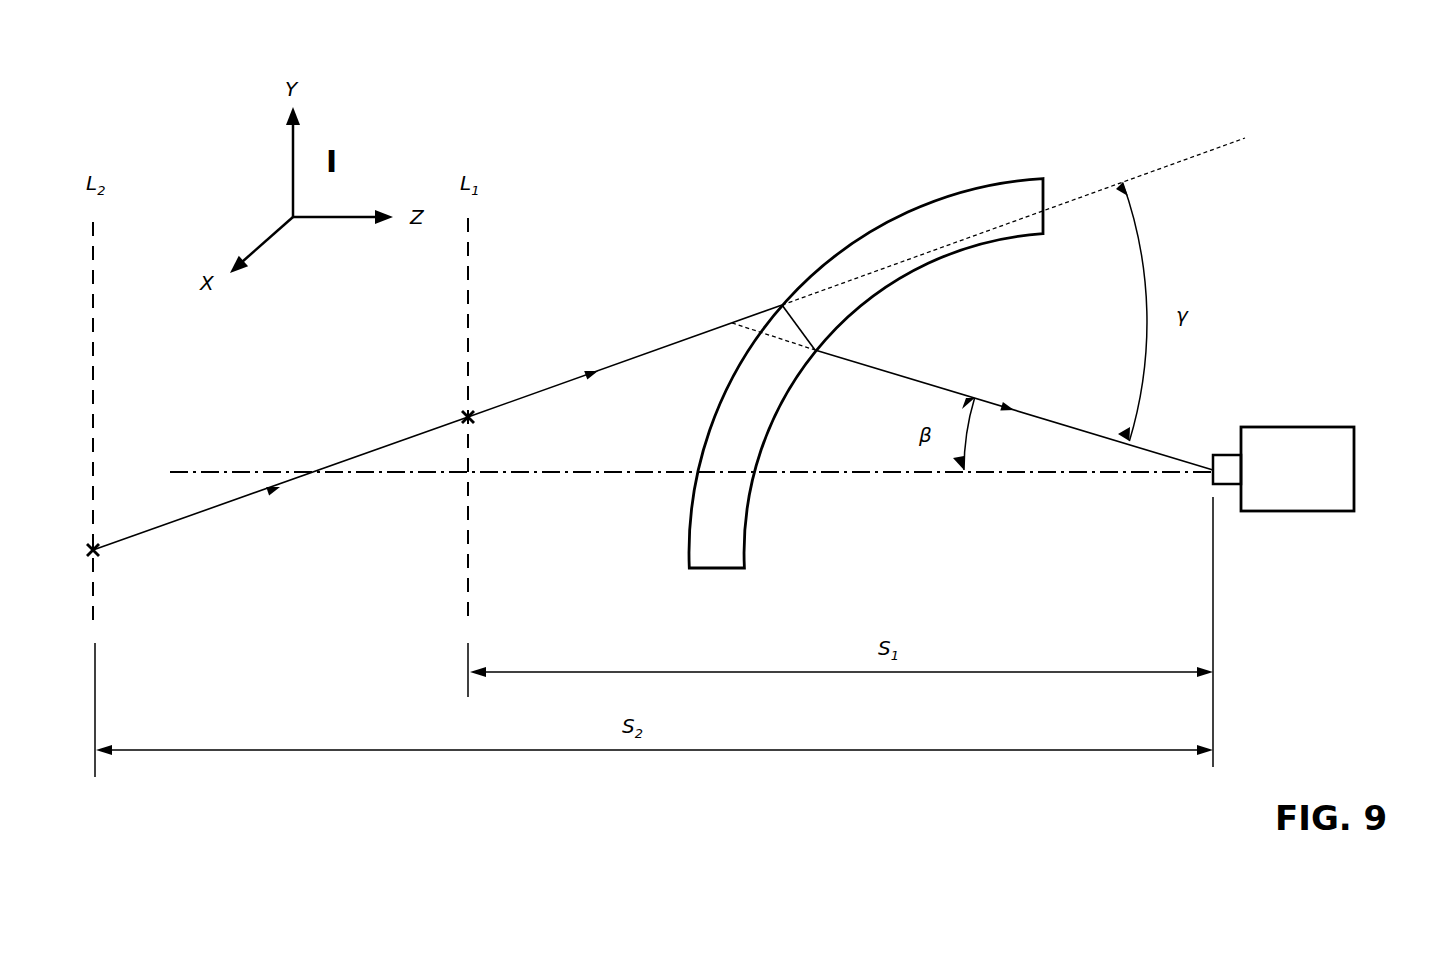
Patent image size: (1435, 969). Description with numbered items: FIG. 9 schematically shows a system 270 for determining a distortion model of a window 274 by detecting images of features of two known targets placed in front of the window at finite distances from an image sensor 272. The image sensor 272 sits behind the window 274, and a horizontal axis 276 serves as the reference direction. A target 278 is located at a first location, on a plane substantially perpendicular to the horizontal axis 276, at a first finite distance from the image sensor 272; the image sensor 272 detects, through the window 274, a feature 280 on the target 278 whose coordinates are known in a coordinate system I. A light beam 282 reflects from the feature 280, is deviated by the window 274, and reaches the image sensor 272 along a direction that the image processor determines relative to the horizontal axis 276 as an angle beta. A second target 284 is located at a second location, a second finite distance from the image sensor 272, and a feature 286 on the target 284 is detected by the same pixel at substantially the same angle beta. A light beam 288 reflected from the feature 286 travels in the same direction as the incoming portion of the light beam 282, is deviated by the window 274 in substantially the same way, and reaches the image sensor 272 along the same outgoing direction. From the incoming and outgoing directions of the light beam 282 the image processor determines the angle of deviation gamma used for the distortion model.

The system 270 is at (715, 150).
The image sensor 272 is at (1323, 427).
The window 274 is at (980, 180).
The horizontal axis 276 is at (192, 472).
The target 278 is at (468, 232).
The feature 280 is at (475, 422).
The light beam 282 is at (633, 355).
The target 284 is at (93, 232).
The feature 286 is at (98, 553).
The light beam 288 is at (432, 428).